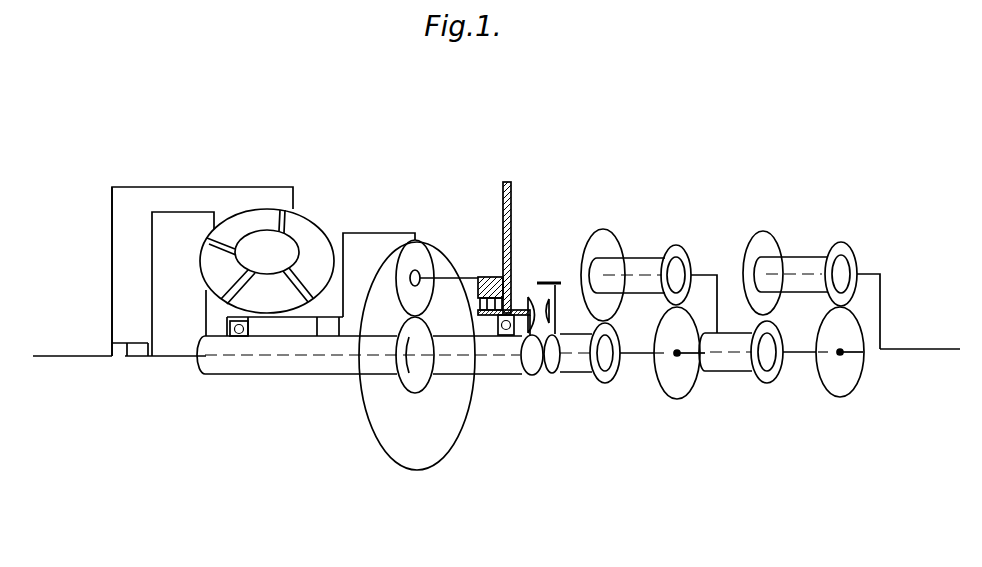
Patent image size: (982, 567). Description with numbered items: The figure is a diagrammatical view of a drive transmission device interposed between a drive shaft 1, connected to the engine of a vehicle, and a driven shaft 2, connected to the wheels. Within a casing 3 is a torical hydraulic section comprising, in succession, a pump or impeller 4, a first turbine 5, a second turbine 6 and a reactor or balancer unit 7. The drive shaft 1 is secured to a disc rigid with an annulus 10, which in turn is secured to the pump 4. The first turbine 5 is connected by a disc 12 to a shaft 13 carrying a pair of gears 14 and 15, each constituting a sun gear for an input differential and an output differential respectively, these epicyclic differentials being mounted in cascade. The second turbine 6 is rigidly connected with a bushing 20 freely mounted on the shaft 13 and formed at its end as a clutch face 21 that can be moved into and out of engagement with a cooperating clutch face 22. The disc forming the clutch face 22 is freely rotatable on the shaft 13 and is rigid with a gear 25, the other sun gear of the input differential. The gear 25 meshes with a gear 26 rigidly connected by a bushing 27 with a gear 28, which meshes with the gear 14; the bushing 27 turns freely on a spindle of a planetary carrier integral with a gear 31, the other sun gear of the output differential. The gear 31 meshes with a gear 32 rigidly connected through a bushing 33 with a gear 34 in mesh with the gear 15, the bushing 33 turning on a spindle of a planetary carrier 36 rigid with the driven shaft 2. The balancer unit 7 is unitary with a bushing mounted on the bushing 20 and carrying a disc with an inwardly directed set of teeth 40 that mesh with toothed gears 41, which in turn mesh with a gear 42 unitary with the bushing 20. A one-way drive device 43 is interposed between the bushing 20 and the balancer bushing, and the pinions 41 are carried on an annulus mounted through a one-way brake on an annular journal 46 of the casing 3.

The drive shaft 1 is at (62, 356).
The driven shaft 2 is at (930, 349).
The casing 3 is at (112, 272).
The pump or impeller 4 is at (267, 261).
The first turbine 5 is at (246, 232).
The second turbine 6 is at (234, 283).
The reactor or balancer unit 7 is at (288, 287).
The annulus 10 is at (213, 187).
The disc 12 is at (152, 270).
The shaft 13 is at (180, 358).
The gear 14 is at (682, 398).
The gear 15 is at (842, 397).
The bushing 20 is at (297, 376).
The clutch face 21 is at (530, 320).
The clutch face 22 is at (548, 373).
The gear 25 is at (605, 383).
The gear 26 is at (605, 230).
The bushing 27 is at (642, 258).
The gear 28 is at (673, 245).
The gear 31 is at (767, 383).
The gear 32 is at (767, 232).
The bushing 33 is at (802, 257).
The gear 34 is at (848, 245).
The planetary carrier 36 is at (882, 293).
The flywheel 40 is at (388, 245).
The toothed gears 41 is at (417, 258).
The gear 42 is at (417, 393).
The one-way drive device 43 is at (330, 332).
The annular journal 46 is at (487, 276).